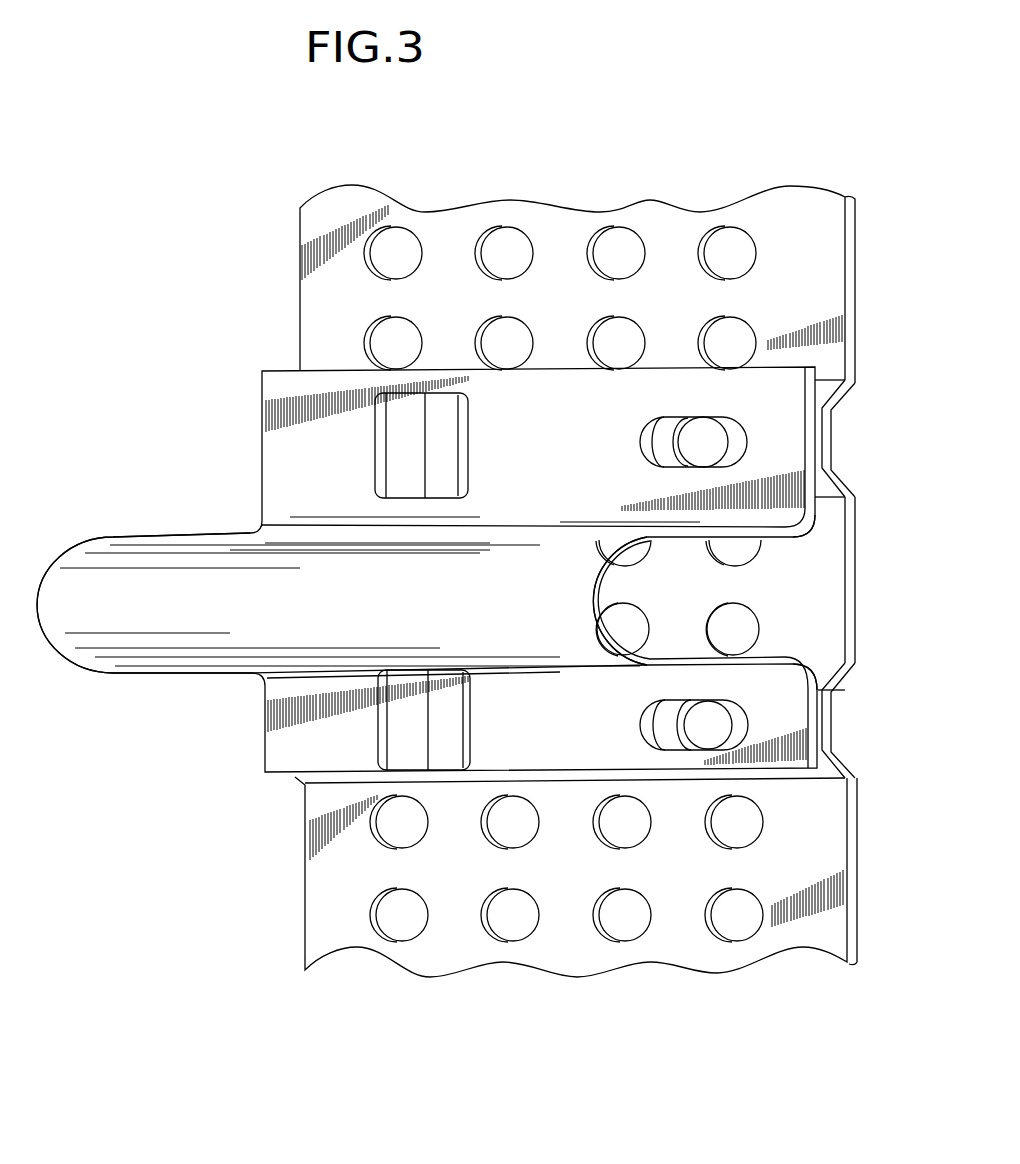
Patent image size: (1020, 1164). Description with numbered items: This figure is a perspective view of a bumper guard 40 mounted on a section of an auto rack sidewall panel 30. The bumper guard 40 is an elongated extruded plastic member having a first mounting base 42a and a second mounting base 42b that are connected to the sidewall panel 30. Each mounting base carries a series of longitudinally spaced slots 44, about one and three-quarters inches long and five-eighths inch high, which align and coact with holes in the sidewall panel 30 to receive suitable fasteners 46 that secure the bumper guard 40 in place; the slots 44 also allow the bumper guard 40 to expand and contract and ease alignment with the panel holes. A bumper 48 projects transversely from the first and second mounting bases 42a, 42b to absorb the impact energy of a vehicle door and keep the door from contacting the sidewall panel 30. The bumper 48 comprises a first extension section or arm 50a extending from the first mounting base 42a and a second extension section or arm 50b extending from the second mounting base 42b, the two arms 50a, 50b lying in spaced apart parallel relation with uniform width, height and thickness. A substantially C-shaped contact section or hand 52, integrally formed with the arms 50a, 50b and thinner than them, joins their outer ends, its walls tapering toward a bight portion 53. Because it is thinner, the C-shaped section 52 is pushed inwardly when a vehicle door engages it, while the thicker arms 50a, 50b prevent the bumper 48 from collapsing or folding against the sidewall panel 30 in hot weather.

The sidewall panel 30 is at (336, 293).
The bumper guard 40 is at (254, 483).
The first mounting base 42a is at (810, 451).
The second mounting base 42b is at (814, 733).
The slots 44 is at (700, 440).
The fasteners 46 is at (405, 436).
The bumper 48 is at (82, 686).
The first extension section or arm 50a is at (745, 548).
The second extension section or arm 50b is at (735, 656).
The C-shaped contact section or hand 52 is at (632, 648).
The bight portion 53 is at (580, 600).